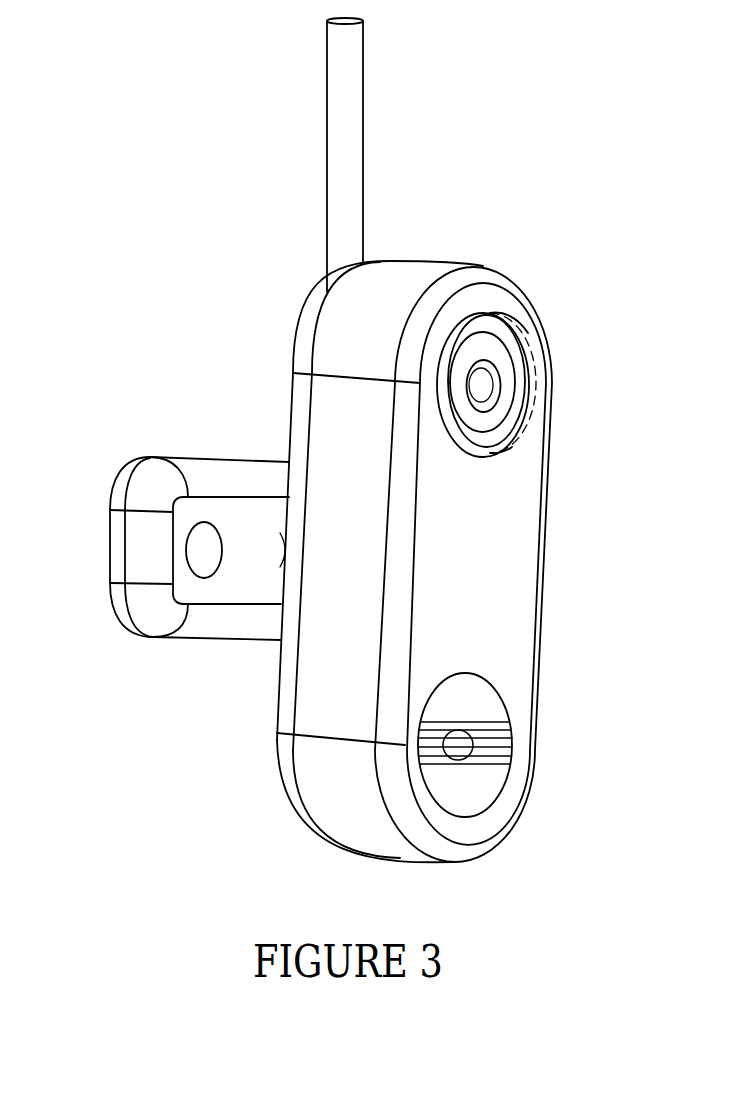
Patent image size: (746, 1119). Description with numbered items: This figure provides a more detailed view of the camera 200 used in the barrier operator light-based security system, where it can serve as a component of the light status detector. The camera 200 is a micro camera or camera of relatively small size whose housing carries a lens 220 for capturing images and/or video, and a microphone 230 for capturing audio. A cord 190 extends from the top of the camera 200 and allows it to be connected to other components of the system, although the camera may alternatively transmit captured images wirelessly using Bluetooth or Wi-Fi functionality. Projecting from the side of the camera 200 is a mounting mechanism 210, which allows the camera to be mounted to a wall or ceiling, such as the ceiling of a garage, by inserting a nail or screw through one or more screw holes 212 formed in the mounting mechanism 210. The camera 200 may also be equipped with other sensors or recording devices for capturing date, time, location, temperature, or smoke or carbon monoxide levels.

The cord 190 is at (363, 89).
The camera 200 is at (582, 353).
The mounting mechanism 210 is at (227, 456).
The screw hole 212 is at (202, 552).
The lens 220 is at (495, 385).
The microphone 230 is at (493, 760).